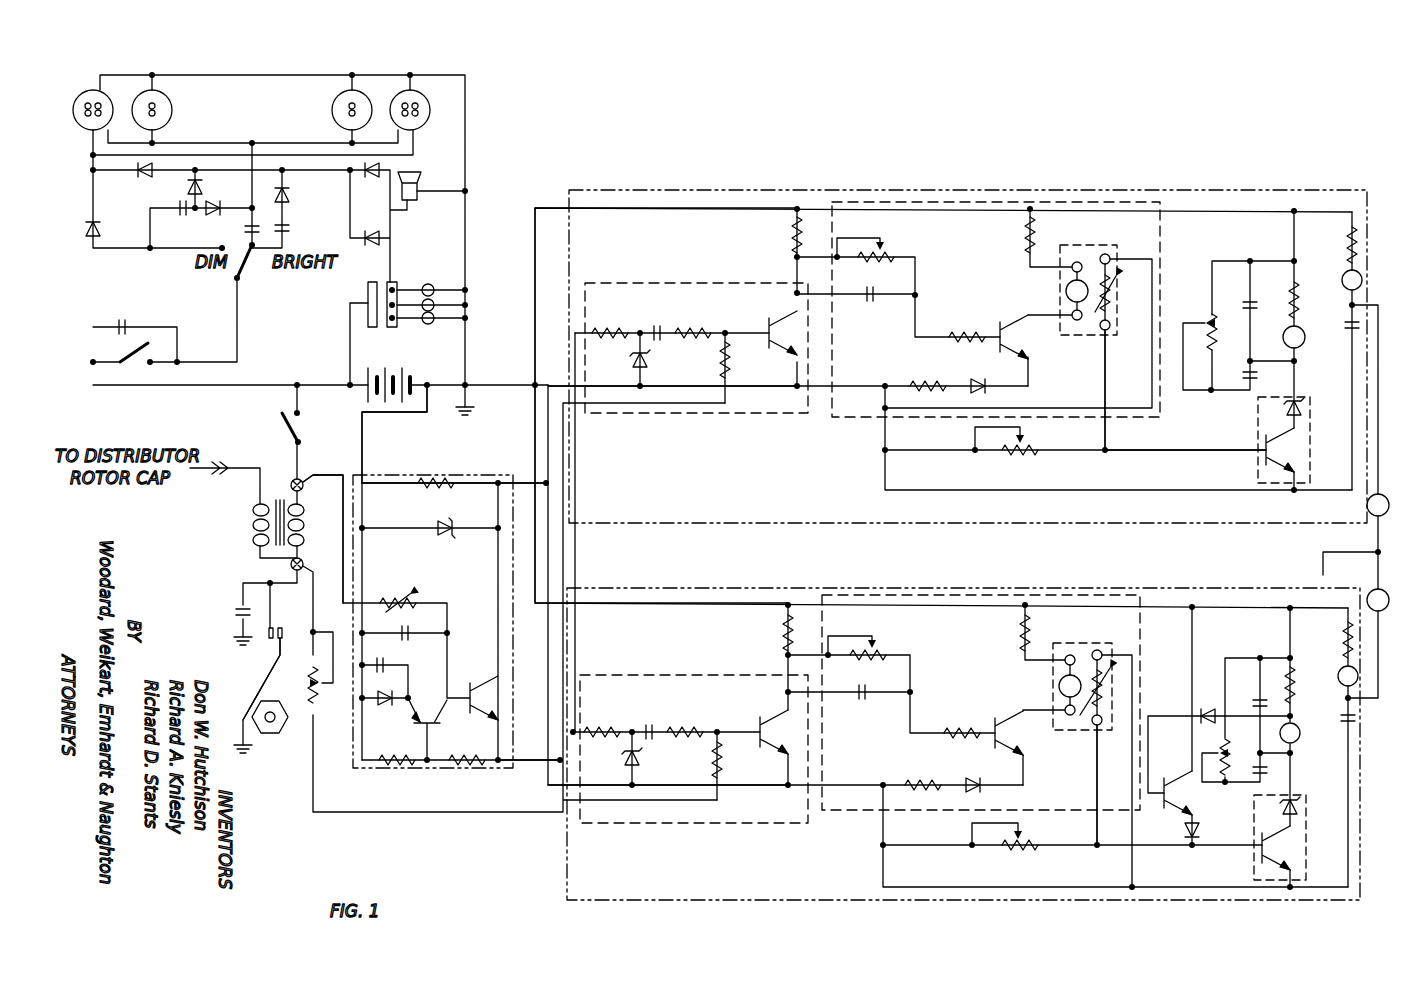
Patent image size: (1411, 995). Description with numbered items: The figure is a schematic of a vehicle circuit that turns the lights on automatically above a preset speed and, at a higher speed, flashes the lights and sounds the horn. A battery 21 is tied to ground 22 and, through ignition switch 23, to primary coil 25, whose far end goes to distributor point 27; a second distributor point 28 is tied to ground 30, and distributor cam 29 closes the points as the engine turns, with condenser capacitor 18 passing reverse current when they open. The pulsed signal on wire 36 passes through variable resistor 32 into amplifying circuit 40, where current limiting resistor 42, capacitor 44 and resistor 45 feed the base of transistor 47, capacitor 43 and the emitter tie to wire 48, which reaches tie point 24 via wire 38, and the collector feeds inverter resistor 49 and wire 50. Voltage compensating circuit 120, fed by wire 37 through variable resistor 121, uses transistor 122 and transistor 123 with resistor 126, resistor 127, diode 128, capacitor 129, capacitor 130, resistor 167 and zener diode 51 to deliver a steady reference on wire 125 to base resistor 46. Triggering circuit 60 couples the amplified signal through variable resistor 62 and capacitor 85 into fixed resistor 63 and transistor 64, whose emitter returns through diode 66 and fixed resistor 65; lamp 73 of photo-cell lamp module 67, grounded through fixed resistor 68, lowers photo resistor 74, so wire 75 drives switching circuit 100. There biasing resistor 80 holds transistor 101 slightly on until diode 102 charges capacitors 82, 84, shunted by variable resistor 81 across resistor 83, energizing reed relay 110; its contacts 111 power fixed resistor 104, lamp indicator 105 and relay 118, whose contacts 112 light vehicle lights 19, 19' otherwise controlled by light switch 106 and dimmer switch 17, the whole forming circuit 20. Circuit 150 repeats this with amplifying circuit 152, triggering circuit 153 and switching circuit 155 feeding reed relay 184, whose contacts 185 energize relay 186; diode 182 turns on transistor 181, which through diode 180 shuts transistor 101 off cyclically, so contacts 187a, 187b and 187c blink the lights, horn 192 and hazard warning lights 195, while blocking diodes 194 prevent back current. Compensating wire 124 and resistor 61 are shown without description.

The dimmer switch 17 is at (258, 272).
The condenser capacitor 18 is at (240, 608).
The vehicle lights 19 is at (256, 105).
The vehicle light 19' is at (252, 107).
The circuit 20 is at (708, 520).
The source of electrical energy 21 is at (408, 357).
The ground 22 is at (455, 418).
The ignition switch 23 is at (309, 426).
The tie point 24 is at (292, 478).
The primary coil 25 is at (302, 525).
The distributor point 27 is at (268, 648).
The distributor point 28 is at (281, 628).
The distributor cam 29 is at (269, 725).
The ground 30 is at (248, 760).
The variable resistor 32 is at (326, 696).
The wire 36 is at (317, 578).
The wire 37 is at (342, 492).
The wire 38 is at (524, 476).
The amplifying circuit 40 is at (706, 416).
The current limiting resistor 42 is at (612, 324).
The capacitor 43 is at (634, 360).
The capacitor 44 is at (664, 326).
The resistor 45 is at (706, 340).
The resistor 46 is at (732, 364).
The transistor 47 is at (782, 320).
The wire 48 is at (556, 382).
The inverter resistor 49 is at (789, 238).
The wire 50 is at (544, 204).
The zener diode 51 is at (436, 535).
The triggering circuit 60 is at (1090, 202).
The potentiometer 61 is at (830, 258).
The variable resistor 62 is at (886, 255).
The fixed resistor 63 is at (964, 334).
The transistor 64 is at (998, 348).
The fixed resistor 65 is at (928, 382).
The diode 66 is at (982, 386).
The photo-cell lamp module 67 is at (1108, 342).
The fixed resistor 68 is at (1038, 234).
The lamp 73 is at (1065, 291).
The photo resistor 74 is at (1112, 304).
The wire 75 is at (1148, 450).
The biasing resistor 80 is at (1027, 454).
The variable resistor 81 is at (1208, 320).
The capacitor 82 is at (1246, 302).
The resistor 83 is at (1290, 302).
The capacitor 84 is at (1244, 374).
The capacitor 85 is at (866, 301).
The switching circuit 100 is at (1258, 476).
The transistor 101 is at (1261, 450).
The diode 102 is at (1304, 402).
The fixed resistor 104 is at (1347, 244).
The lamp indicator 105 is at (1345, 284).
The light switch 106 is at (120, 362).
The reed relay 110 is at (1300, 328).
The normally open contacts 111 is at (1344, 336).
The normally open contacts 112 is at (115, 323).
The relay 118 is at (1376, 516).
The voltage compensating circuit 120 is at (440, 472).
The variable resistor 121 is at (417, 588).
The transistor 122 is at (442, 719).
The transistor 123 is at (494, 678).
The conductor 124 is at (362, 455).
The wire 125 is at (530, 766).
The resistor 126 is at (464, 770).
The resistor 127 is at (394, 770).
The diode 128 is at (382, 708).
The capacitor 129 is at (398, 663).
The capacitor 130 is at (408, 626).
The circuit 150 is at (726, 590).
The amplifying circuit 152 is at (672, 674).
The triggering circuit 153 is at (1062, 598).
The switching circuit 155 is at (1256, 866).
The resistor 167 is at (438, 494).
The diode 180 is at (1192, 832).
The transistor 181 is at (1160, 806).
The diode 182 is at (1208, 706).
The reed relay 184 is at (1298, 740).
The normally open contacts 185 is at (1345, 714).
The relay 186 is at (1372, 594).
The normally open contact 187a is at (180, 216).
The normally open contact 187b is at (290, 224).
The normally closed contact 187c is at (246, 230).
The horn 192 is at (420, 180).
The blocking diodes 194 is at (146, 178).
The hazard warning lights 195 is at (419, 272).